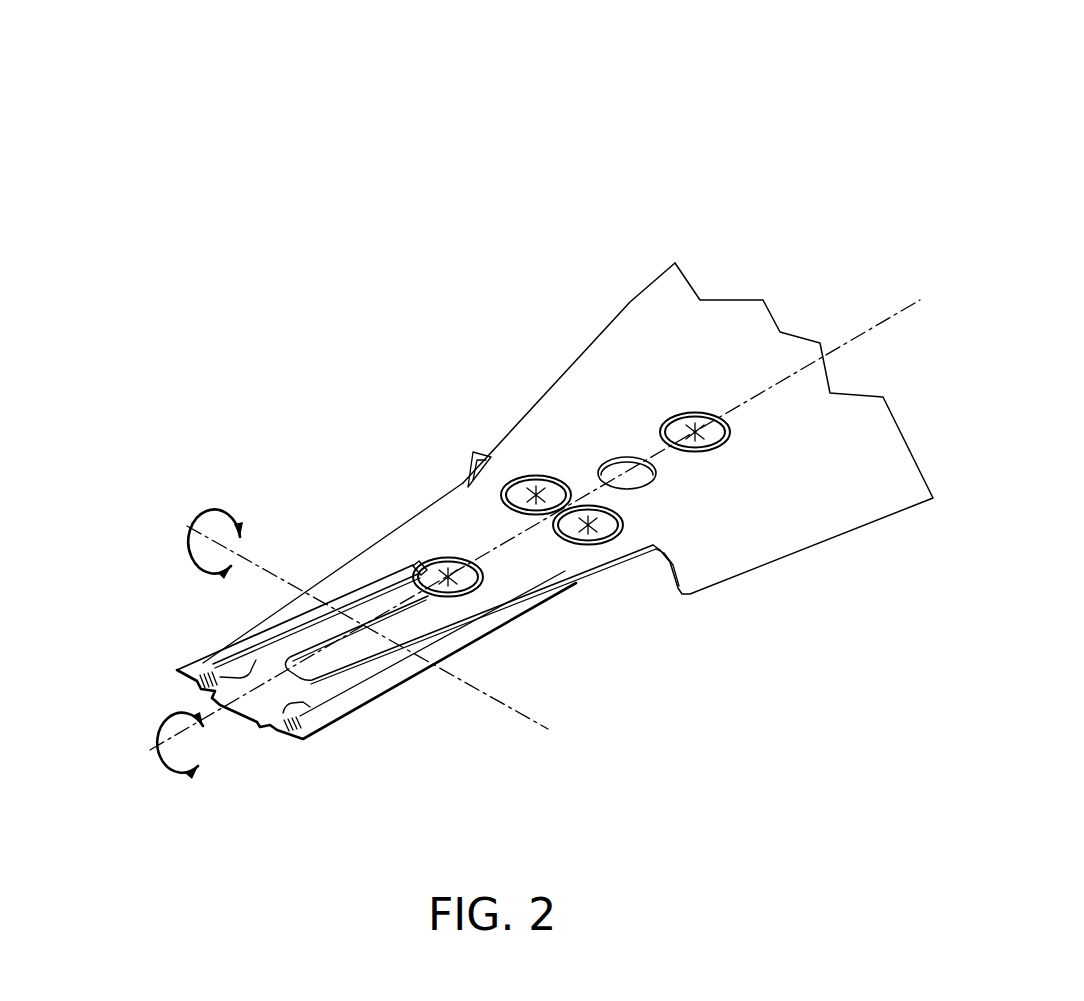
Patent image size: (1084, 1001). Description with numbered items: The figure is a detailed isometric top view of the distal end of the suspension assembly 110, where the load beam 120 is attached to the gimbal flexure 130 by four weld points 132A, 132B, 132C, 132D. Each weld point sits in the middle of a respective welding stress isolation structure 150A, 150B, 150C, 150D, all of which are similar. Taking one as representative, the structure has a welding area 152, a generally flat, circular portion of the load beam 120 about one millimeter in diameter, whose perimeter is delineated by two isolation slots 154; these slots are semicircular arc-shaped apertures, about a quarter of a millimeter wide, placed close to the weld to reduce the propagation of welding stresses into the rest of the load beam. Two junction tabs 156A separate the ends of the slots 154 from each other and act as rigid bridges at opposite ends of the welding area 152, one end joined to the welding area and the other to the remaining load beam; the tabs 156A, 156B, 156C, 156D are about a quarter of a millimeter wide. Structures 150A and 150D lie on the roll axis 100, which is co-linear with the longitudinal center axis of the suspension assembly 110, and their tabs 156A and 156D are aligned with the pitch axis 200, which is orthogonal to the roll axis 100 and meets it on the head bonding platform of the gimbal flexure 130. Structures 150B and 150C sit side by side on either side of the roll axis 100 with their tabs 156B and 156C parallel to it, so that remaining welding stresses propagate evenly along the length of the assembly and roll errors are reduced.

The roll axis 100 is at (512, 539).
The suspension assembly 110 is at (407, 195).
The load beam 120 is at (675, 263).
The gimbal flexure 130 is at (228, 727).
The weld point 132A is at (437, 580).
The weld point 132B is at (592, 532).
The weld point 132C is at (537, 485).
The weld point 132D is at (698, 425).
The welding stress isolation structure 150A is at (427, 610).
The welding stress isolation structure 150B is at (615, 545).
The welding stress isolation structure 150C is at (509, 470).
The welding stress isolation structure 150D is at (713, 407).
The welding area 152 is at (418, 575).
The isolation slot 154 is at (443, 560).
The junction tab 156A is at (432, 562).
The junction tab 156B is at (620, 513).
The junction tab 156C is at (556, 484).
The junction tab 156D is at (671, 418).
The pitch axis 200 is at (349, 614).